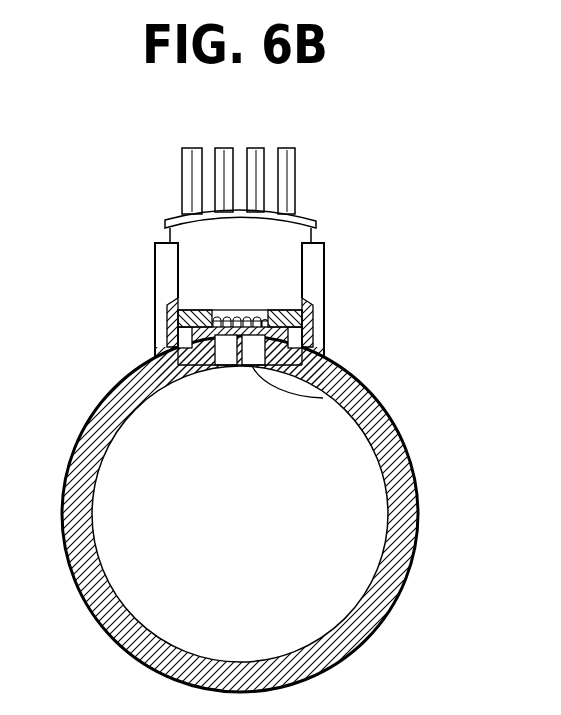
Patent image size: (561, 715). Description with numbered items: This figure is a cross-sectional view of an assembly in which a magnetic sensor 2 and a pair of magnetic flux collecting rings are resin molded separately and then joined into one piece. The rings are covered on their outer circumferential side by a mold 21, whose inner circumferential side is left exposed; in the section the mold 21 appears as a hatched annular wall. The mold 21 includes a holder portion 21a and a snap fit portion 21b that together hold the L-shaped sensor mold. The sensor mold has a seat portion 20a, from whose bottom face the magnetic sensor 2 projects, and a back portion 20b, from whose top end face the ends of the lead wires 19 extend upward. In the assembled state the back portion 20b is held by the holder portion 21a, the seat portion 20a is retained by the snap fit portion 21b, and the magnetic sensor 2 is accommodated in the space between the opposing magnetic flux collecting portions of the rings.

The magnetic sensor 2 is at (365, 391).
The lead wires 19 is at (293, 172).
The seat portion 20a is at (303, 295).
The back portion 20b is at (188, 232).
The mold 21 is at (408, 443).
The holder portion 21a is at (313, 250).
The snap fit portion 21b is at (312, 333).